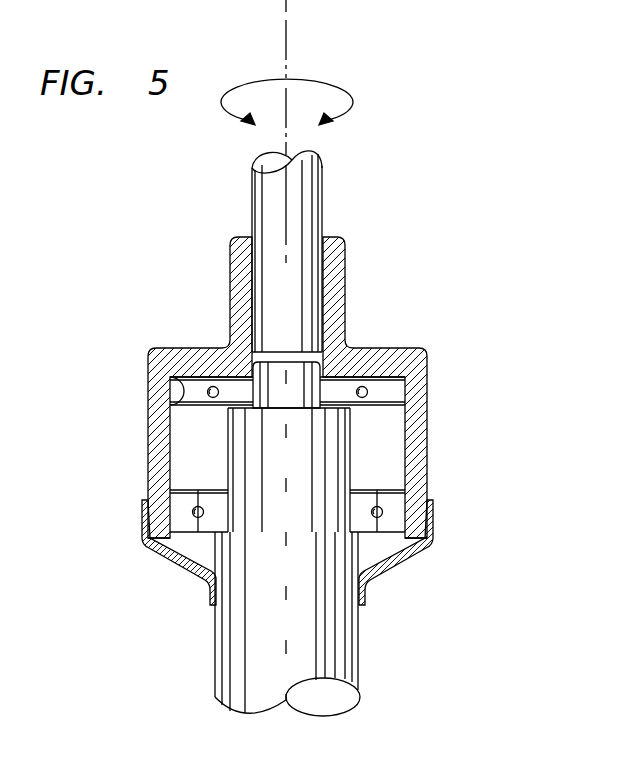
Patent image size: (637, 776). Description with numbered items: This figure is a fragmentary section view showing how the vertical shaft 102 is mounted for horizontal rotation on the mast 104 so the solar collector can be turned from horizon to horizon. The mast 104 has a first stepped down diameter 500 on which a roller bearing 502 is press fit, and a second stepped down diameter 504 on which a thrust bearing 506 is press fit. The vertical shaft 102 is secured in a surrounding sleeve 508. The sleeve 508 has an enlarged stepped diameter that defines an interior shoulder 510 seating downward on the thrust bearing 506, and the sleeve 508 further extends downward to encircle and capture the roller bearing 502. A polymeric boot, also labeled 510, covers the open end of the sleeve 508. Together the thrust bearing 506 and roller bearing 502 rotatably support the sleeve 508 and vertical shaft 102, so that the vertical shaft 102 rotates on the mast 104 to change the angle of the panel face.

The vertical shaft 102 is at (256, 191).
The mast 104 is at (226, 676).
The first stepped down diameter 500 is at (300, 522).
The roller bearing 502 is at (393, 497).
The second stepped down diameter 504 is at (295, 398).
The thrust bearing 506 is at (395, 383).
The sleeve 508 is at (150, 469).
The interior shoulder 510 is at (172, 414).